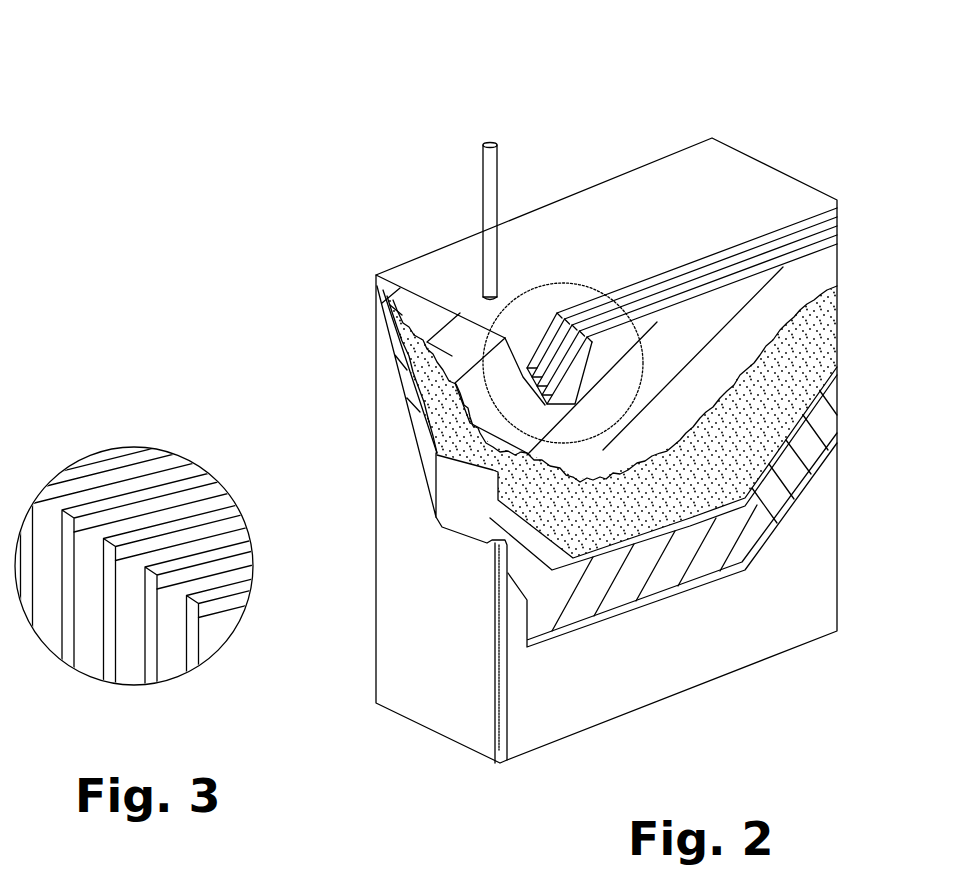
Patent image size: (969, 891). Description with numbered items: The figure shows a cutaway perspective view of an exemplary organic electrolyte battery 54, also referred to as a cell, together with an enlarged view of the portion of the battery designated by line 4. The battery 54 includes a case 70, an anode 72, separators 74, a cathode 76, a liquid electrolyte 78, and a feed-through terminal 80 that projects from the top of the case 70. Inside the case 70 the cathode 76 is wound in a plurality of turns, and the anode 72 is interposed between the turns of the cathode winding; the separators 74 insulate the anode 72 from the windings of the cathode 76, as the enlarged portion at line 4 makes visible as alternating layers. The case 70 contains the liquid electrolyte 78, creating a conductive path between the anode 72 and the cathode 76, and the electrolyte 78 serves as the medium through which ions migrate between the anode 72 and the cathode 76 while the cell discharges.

In FIG. 2, the organic electrolyte battery 54 is at (664, 73).
In FIG. 2, the case 70 is at (767, 183).
In FIG. 2, the feed-through terminal 80 is at (497, 195).
In FIG. 2, the line 4 is at (580, 287).
In FIG. 2, the liquid electrolyte 78 is at (812, 348).
In FIG. 3, the separators 74 is at (205, 490).
In FIG. 3, the cathode 76 is at (223, 541).
In FIG. 3, the anode 72 is at (172, 637).